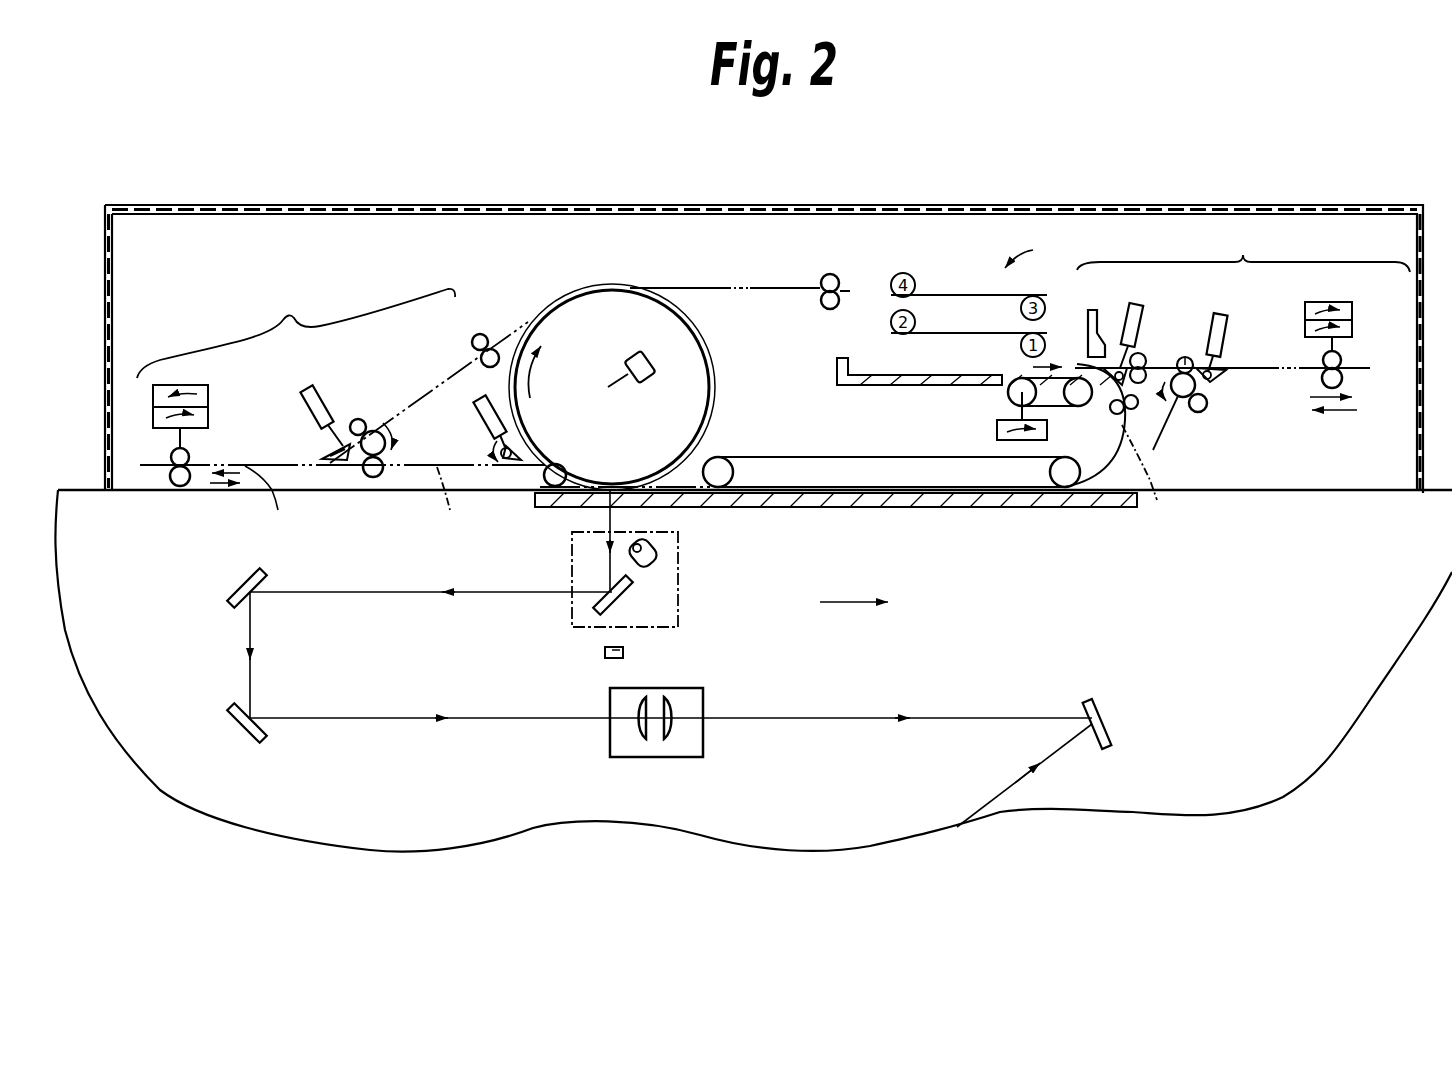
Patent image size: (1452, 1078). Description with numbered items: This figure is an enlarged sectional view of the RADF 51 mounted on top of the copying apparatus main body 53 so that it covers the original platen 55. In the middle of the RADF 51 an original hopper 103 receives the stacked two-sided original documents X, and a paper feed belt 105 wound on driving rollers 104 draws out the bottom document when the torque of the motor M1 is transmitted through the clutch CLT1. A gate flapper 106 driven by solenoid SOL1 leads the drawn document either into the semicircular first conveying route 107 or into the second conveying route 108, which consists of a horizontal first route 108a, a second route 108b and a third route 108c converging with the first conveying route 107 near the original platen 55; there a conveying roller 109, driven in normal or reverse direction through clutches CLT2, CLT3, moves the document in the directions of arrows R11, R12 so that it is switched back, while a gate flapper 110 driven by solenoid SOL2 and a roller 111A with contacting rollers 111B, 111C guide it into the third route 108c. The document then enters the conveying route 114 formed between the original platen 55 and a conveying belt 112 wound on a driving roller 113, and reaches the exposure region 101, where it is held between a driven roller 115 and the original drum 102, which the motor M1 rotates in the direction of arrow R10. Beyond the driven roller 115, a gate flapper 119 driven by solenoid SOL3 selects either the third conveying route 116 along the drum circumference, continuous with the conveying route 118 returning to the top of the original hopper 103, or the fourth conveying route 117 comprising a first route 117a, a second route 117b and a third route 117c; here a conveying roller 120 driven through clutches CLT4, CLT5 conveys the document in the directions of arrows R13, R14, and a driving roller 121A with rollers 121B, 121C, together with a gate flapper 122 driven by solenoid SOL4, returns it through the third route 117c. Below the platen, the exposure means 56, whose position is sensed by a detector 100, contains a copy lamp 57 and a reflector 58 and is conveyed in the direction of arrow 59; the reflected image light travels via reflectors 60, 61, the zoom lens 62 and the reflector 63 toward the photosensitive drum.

The RADF 51 is at (1190, 230).
The copying apparatus main body 53 is at (163, 773).
The original platen 55 is at (836, 519).
The exposure means 56 is at (683, 552).
The copy lamp 57 is at (658, 566).
The reflector 58 is at (624, 598).
The arrow 59 is at (853, 603).
The reflector 60 is at (242, 585).
The reflector 61 is at (232, 717).
The zoom lens 62 is at (685, 697).
The reflector 63 is at (1102, 713).
The detector 100 is at (624, 654).
The exposure region 101 is at (605, 503).
The original drum 102 is at (683, 345).
The original hopper 103 is at (875, 386).
The driving rollers 104 is at (1077, 404).
The paper feed belt 105 is at (1033, 378).
The gate flapper 106 is at (1120, 356).
The first conveying route 107 is at (1157, 500).
The second conveying route 108 is at (1242, 341).
The first route 108a is at (1153, 352).
The second route 108b is at (1263, 368).
The third route 108c is at (1155, 467).
The conveying roller 109 is at (1323, 362).
The gate flapper 110 is at (1197, 390).
The roller 111A is at (1128, 410).
The roller 111B is at (1180, 362).
The roller 111C is at (1200, 412).
The conveying belt 112 is at (797, 455).
The driving roller 113 is at (725, 462).
The conveying route 114 is at (953, 503).
The driven roller 115 is at (563, 472).
The third conveying route 116 is at (505, 383).
The fourth conveying route 117 is at (341, 413).
The first route 117a is at (452, 505).
The second route 117b is at (273, 505).
The third route 117c is at (442, 370).
The conveying route 118 is at (722, 285).
The gate flapper 119 is at (512, 470).
The conveying roller 120 is at (176, 486).
The driving roller 121A is at (378, 431).
The roller 121B is at (378, 477).
The roller 121C is at (359, 419).
The gate flapper 122 is at (338, 465).
The motor M1 is at (650, 383).
The arrow R10 is at (544, 384).
The arrow R11 is at (1337, 398).
The arrow R12 is at (1328, 411).
The arrow R13 is at (214, 470).
The arrow R14 is at (226, 486).
The solenoid SOL1 is at (1137, 305).
The solenoid SOL2 is at (1238, 310).
The solenoid SOL3 is at (478, 430).
The solenoid SOL4 is at (310, 386).
The clutch CLT1 is at (997, 425).
The clutch CLT2 is at (1352, 335).
The clutch CLT3 is at (1352, 312).
The clutch CLT4 is at (208, 420).
The clutch CLT5 is at (208, 393).
The original document X is at (1029, 249).